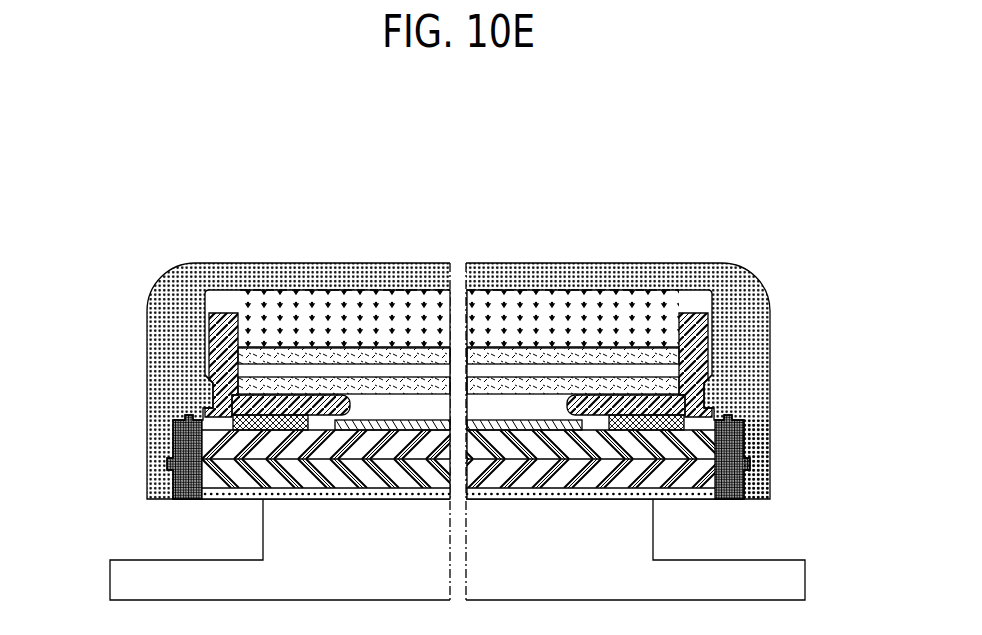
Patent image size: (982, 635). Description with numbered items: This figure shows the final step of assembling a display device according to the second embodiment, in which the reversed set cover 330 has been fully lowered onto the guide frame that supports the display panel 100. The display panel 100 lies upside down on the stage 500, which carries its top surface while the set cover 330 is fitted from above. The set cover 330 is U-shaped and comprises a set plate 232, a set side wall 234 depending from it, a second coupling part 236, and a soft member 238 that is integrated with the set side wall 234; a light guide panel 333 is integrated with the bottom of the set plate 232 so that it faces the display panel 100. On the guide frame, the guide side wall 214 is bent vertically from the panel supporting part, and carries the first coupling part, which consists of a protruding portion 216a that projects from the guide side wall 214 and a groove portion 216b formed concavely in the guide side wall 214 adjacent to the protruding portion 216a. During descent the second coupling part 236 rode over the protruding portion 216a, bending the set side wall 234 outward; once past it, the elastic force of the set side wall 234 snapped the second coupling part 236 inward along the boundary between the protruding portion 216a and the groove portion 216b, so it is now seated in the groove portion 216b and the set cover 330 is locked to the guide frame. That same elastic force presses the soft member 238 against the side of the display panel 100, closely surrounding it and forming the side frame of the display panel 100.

The display panel 100 is at (208, 512).
The guide side wall 214 is at (697, 338).
The protruding portion 216a is at (713, 372).
The groove portion 216b is at (706, 398).
The set plate 232 is at (588, 275).
The set side wall 234 is at (757, 443).
The second coupling part 236 is at (690, 392).
The soft member 238 is at (740, 477).
The set cover 330 is at (766, 265).
The light guide panel 333 is at (640, 305).
The stage 500 is at (805, 560).